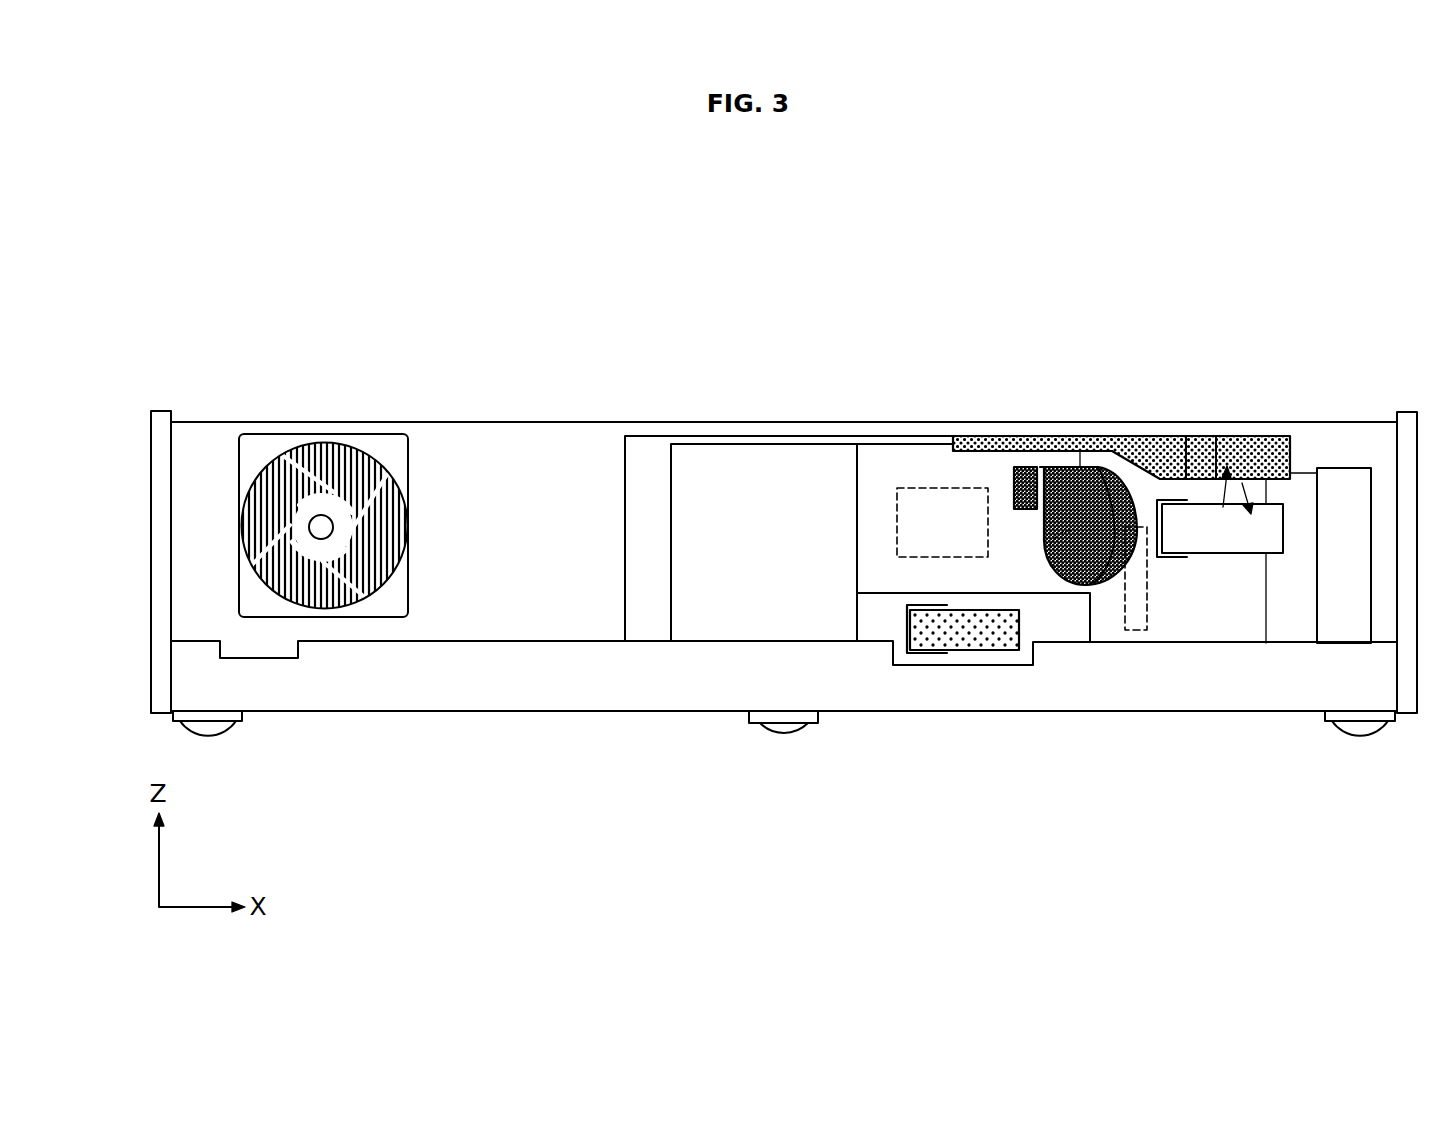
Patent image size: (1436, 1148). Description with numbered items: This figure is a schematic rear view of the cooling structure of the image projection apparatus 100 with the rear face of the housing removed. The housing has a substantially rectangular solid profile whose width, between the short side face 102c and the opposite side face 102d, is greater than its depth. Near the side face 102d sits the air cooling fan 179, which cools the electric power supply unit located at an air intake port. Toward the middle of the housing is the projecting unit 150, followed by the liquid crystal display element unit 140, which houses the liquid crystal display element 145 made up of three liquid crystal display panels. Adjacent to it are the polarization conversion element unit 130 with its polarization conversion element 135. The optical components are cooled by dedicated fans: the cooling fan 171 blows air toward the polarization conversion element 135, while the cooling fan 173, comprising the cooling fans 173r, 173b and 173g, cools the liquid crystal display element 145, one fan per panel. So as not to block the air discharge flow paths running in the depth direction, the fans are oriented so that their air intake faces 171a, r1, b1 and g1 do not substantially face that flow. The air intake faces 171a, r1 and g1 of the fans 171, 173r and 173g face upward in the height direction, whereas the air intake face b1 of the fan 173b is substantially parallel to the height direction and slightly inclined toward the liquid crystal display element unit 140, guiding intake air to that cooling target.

The image projection apparatus 100 is at (1300, 311).
The side face 102c is at (1405, 412).
The side face 102d is at (159, 411).
The air cooling fan 179 is at (318, 455).
The projecting unit 150 is at (766, 460).
The liquid crystal display element unit 140 is at (967, 470).
The liquid crystal display element 145 is at (898, 487).
The cooling fan 171 is at (1247, 500).
The air intake face 171a is at (1283, 497).
The polarization conversion element unit 130 is at (1242, 620).
The polarization conversion element 135 is at (1137, 505).
The cooling fan 173 is at (1065, 676).
The cooling fan 173g is at (970, 636).
The cooling fan 173b is at (1096, 533).
The cooling fan 173r is at (1223, 507).
The air intake face r1 is at (1227, 437).
The air intake face g1 is at (1000, 603).
The air intake face b1 is at (1046, 548).